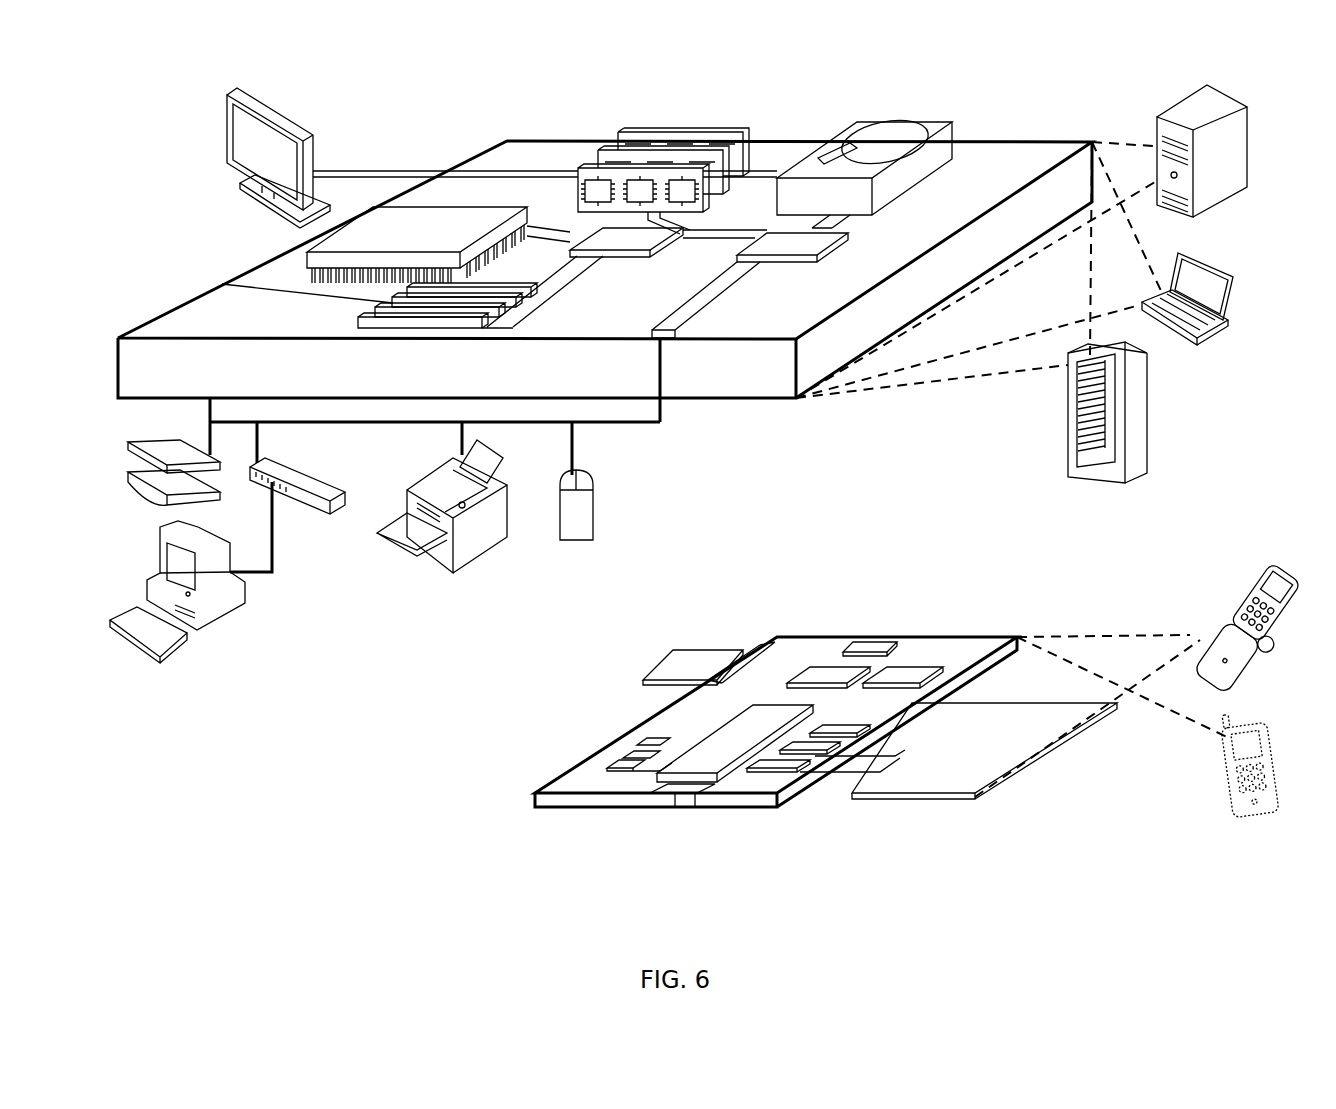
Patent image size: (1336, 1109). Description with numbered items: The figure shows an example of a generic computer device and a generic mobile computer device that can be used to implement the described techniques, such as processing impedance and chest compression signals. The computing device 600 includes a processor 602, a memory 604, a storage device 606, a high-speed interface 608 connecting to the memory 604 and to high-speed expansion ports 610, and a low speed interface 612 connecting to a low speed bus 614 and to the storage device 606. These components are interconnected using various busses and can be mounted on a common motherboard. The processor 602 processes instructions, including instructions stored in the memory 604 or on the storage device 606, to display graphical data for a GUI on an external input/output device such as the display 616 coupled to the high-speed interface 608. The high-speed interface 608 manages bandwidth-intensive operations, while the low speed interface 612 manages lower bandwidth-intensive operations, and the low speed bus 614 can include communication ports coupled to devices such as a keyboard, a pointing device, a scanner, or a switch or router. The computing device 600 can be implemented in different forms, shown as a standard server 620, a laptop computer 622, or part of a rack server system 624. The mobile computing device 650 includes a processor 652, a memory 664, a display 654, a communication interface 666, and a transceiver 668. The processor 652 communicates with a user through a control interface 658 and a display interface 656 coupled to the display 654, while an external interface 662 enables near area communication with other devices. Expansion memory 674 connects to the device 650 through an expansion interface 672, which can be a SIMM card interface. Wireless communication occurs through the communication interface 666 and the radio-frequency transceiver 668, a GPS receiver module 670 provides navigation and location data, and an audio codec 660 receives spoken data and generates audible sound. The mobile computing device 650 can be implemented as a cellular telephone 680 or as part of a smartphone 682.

The computing device 600 is at (434, 115).
The processor 602 is at (302, 261).
The memory 604 is at (634, 133).
The storage device 606 is at (860, 122).
The high-speed interface 608 is at (598, 240).
The high-speed expansion ports 610 is at (222, 284).
The low speed interface 612 is at (793, 244).
The low speed bus 614 is at (672, 340).
The display 616 is at (230, 96).
The standard server 620 is at (1160, 118).
The laptop computer 622 is at (1195, 258).
The rack server system 624 is at (1072, 457).
The mobile computer device 650 is at (758, 612).
The processor 652 is at (700, 785).
The display 654 is at (980, 800).
The display interface 656 is at (778, 773).
The control interface 658 is at (838, 752).
The audio codec 660 is at (833, 738).
The external interface 662 is at (677, 797).
The memory 664 is at (628, 760).
The communication interface 666 is at (815, 668).
The transceiver 668 is at (902, 672).
The GPS receiver module 670 is at (870, 642).
The expansion interface 672 is at (748, 650).
The expansion memory 674 is at (682, 650).
The cellular telephone 680 is at (1250, 576).
The smartphone 682 is at (1235, 715).